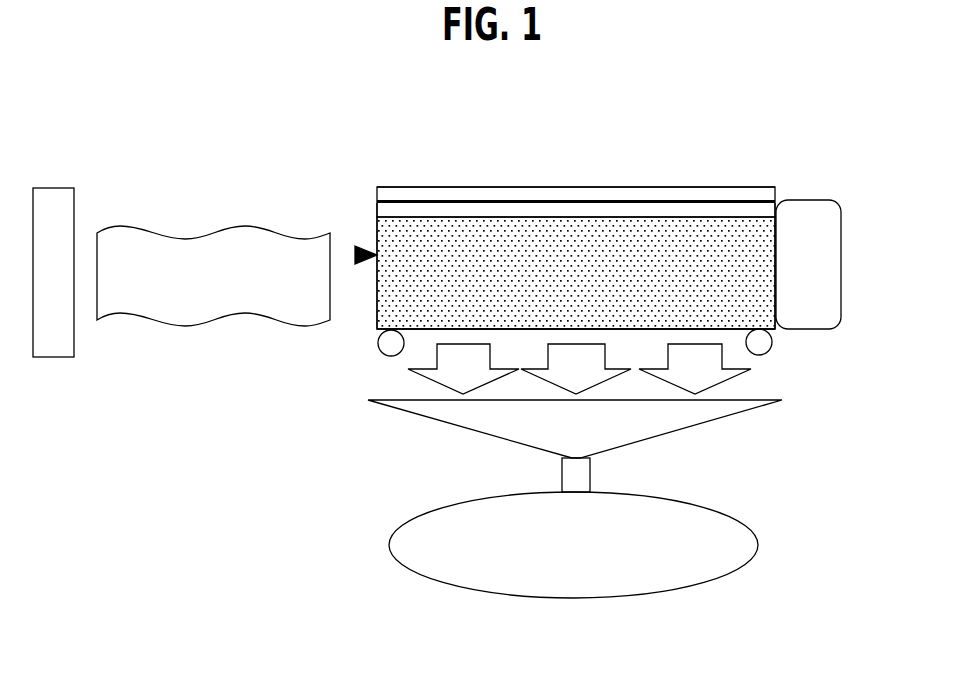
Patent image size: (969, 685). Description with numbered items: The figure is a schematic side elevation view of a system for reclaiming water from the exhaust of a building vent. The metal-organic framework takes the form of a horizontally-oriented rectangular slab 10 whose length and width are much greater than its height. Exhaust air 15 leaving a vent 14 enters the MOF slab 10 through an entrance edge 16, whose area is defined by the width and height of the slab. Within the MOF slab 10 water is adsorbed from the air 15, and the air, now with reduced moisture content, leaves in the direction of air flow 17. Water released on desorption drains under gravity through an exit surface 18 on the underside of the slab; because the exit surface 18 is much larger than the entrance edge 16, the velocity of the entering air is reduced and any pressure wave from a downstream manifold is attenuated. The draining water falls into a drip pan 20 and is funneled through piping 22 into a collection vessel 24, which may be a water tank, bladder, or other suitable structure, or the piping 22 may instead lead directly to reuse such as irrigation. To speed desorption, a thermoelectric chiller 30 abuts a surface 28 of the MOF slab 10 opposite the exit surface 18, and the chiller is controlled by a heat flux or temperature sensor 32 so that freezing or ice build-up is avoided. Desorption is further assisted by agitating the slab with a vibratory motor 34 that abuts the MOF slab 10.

The MOF slab 10 is at (356, 253).
The vent 14 is at (52, 187).
The air 15 is at (143, 228).
The entrance edge 16 is at (377, 318).
The air flow direction 17 is at (747, 373).
The exit surface 18 is at (422, 330).
The drip pan 20 is at (472, 430).
The piping 22 is at (590, 476).
The collection vessel 24 is at (740, 568).
The surface 28 is at (657, 217).
The thermoelectric chiller 30 is at (377, 210).
The heat flux sensor or temperature sensor 32 is at (509, 187).
The vibratory motor 34 is at (808, 329).